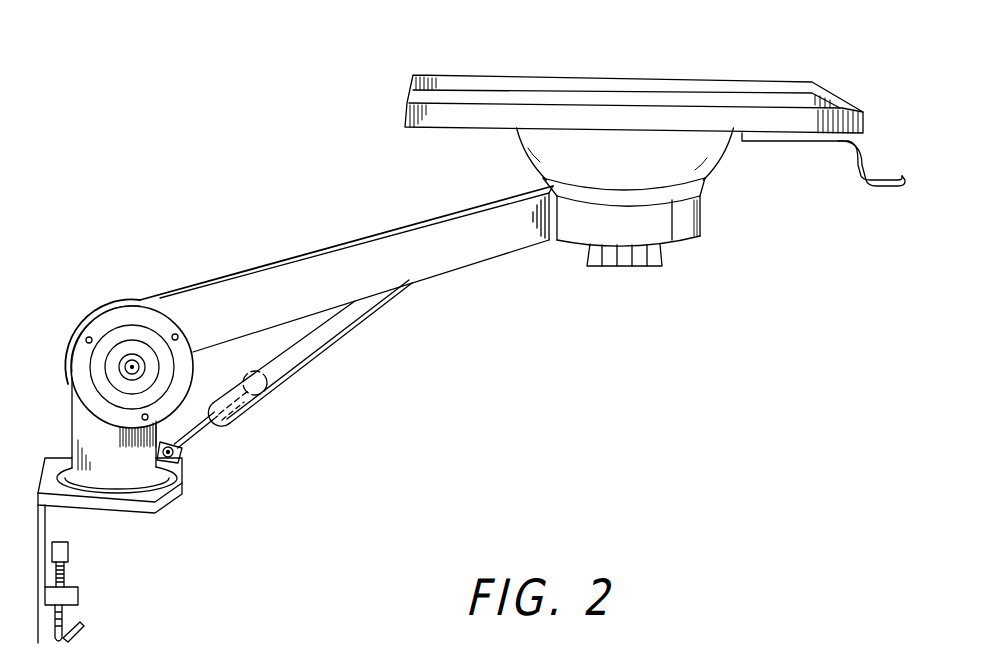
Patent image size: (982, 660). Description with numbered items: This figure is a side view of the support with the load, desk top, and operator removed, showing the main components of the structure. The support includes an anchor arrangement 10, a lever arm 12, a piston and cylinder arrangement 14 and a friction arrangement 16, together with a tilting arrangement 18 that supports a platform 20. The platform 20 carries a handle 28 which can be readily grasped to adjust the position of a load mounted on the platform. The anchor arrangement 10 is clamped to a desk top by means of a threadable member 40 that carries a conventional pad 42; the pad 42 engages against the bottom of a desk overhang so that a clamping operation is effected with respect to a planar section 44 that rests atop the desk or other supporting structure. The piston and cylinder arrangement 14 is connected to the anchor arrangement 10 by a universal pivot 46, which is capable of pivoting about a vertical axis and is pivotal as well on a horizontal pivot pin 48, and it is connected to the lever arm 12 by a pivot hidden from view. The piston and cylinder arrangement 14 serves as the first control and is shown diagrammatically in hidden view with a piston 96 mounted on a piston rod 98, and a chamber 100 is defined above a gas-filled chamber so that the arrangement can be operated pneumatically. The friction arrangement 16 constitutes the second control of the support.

The anchor arrangement 10 is at (55, 457).
The lever arm 12 is at (340, 242).
The piston and cylinder arrangement 14 is at (282, 393).
The friction arrangement 16 is at (118, 290).
The tilting arrangement 18 is at (723, 160).
The platform 20 is at (520, 95).
The handle 28 is at (872, 184).
The threadable member 40 is at (67, 624).
The pad 42 is at (68, 546).
The planar section 44 is at (103, 507).
The universal pivot 46 is at (143, 482).
The horizontal pivot pin 48 is at (178, 452).
The piston 96 is at (267, 378).
The piston rod 98 is at (237, 400).
The chamber 100 is at (332, 327).